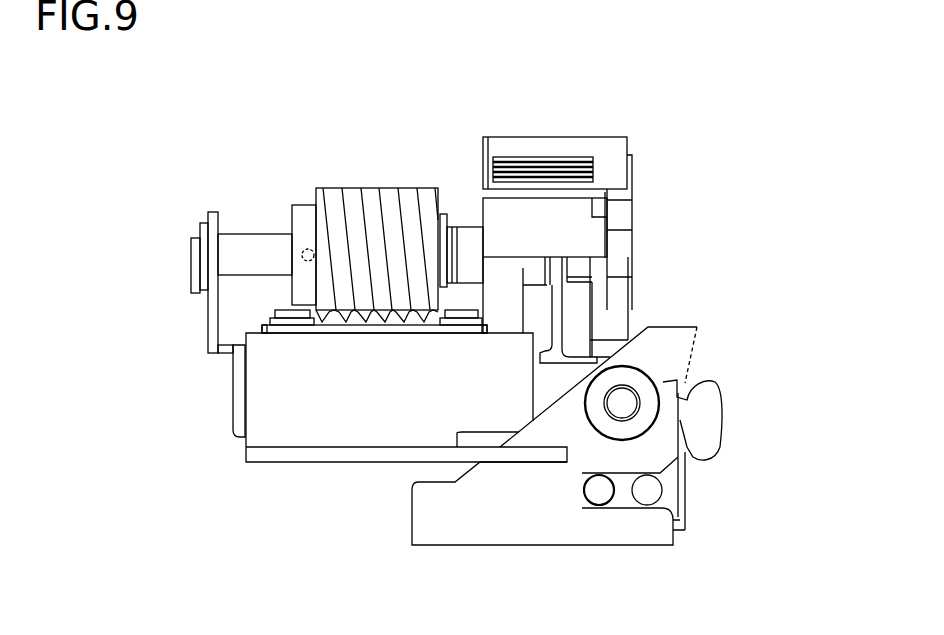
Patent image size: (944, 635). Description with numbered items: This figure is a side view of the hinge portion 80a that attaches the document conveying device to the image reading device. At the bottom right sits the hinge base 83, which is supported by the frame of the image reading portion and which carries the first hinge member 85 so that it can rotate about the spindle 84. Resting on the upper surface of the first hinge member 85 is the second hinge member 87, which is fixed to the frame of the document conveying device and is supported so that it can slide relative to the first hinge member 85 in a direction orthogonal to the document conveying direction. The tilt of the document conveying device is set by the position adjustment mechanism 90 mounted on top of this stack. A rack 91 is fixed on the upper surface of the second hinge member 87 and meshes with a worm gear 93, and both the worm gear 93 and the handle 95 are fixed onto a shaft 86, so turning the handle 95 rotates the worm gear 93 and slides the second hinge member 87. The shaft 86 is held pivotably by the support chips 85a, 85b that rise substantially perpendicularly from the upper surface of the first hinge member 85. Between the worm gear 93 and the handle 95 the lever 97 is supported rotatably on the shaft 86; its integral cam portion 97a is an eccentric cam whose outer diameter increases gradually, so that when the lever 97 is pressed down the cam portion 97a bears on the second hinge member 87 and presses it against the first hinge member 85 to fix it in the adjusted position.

The position adjustment mechanism 90 is at (617, 117).
The lever 97 is at (545, 146).
The cam portion 97a is at (490, 277).
The handle 95 is at (622, 217).
The worm gear 93 is at (373, 242).
The shaft 86 is at (250, 251).
The first hinge member 85 is at (238, 417).
The support chip 85a is at (210, 322).
The support chip 85b is at (557, 303).
The second hinge member 87 is at (330, 423).
The rack 91 is at (377, 328).
The hinge portion 80a is at (697, 300).
The hinge base 83 is at (560, 530).
The spindle 84 is at (624, 402).